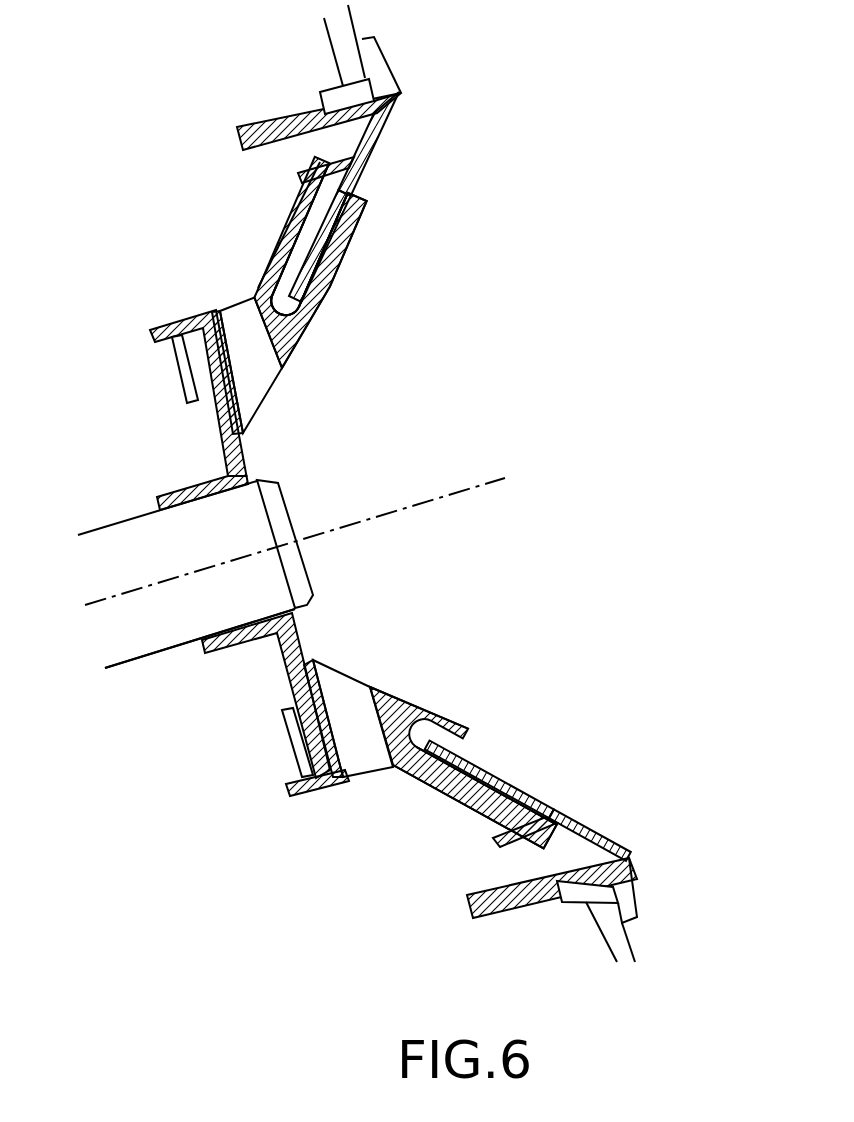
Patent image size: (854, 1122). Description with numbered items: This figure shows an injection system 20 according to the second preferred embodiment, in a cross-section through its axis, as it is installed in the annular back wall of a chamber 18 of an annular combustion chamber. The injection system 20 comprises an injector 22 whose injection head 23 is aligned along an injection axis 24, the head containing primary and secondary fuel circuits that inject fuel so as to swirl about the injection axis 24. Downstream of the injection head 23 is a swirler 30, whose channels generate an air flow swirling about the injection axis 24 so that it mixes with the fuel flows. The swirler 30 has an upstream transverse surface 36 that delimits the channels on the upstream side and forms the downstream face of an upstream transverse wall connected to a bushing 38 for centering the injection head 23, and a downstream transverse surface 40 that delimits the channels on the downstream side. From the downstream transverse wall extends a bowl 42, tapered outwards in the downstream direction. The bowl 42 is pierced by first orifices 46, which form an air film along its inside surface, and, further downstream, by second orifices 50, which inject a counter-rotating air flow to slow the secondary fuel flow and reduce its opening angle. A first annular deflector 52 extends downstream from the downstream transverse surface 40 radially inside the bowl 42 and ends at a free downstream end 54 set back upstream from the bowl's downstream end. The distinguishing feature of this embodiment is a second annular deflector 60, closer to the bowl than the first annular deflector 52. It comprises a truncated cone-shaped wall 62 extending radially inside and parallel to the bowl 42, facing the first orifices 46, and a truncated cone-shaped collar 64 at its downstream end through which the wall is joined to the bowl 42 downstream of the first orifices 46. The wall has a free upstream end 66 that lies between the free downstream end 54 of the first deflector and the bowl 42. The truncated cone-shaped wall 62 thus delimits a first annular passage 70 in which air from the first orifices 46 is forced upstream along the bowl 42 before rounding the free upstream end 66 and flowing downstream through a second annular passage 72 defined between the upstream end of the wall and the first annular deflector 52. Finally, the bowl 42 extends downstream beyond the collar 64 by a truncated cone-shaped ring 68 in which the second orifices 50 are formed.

The chamber 18 is at (620, 937).
The injection system 20 is at (135, 250).
The injector 22 is at (103, 522).
The injection head 23 is at (167, 637).
The injection axis 24 is at (446, 478).
The swirler 30 is at (371, 780).
The upstream transverse surface 36 is at (217, 316).
The bushing 38 is at (188, 484).
The downstream transverse surface 40 is at (263, 375).
The bowl 42 is at (263, 291).
The first orifices 46 is at (290, 231).
The second orifices 50 is at (376, 134).
The first annular deflector 52 is at (323, 313).
The free downstream end 54 is at (325, 288).
The second annular deflector 60 is at (332, 240).
The truncated cone-shaped wall 62 is at (332, 240).
The truncated cone-shaped collar 64 is at (358, 192).
The free upstream end 66 is at (418, 725).
The truncated cone-shaped ring 68 is at (610, 842).
The first annular passage 70 is at (470, 784).
The second annular passage 72 is at (447, 741).